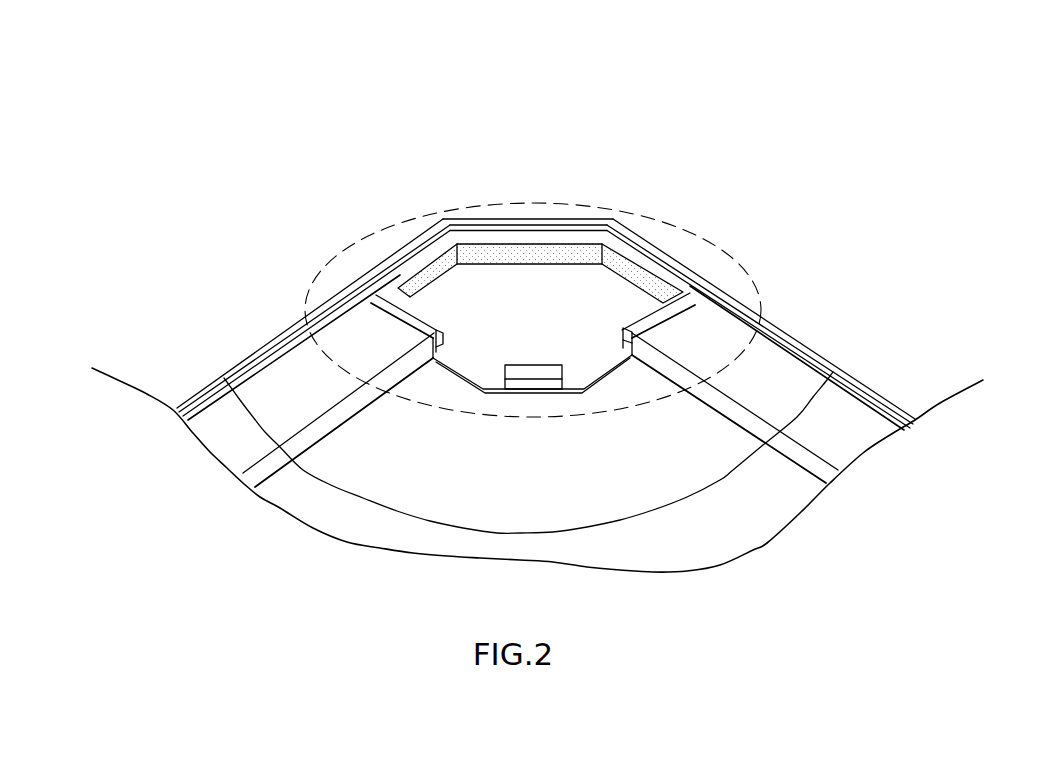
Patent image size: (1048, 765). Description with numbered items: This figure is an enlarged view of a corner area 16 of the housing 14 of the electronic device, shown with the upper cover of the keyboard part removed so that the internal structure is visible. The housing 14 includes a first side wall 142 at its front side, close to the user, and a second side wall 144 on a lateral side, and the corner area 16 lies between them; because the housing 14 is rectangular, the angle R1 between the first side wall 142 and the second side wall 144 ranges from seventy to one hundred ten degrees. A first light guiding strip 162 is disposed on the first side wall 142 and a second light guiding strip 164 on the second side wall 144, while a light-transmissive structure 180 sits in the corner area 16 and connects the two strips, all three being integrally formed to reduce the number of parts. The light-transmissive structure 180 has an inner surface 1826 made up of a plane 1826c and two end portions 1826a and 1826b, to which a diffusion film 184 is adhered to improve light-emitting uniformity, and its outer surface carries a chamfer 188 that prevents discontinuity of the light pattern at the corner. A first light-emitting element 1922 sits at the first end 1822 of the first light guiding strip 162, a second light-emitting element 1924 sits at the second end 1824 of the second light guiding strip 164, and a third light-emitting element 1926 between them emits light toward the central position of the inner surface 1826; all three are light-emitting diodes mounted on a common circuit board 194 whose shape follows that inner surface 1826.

The housing 14 is at (558, 281).
The first side wall 142 is at (896, 370).
The second side wall 144 is at (216, 316).
The corner area 16 is at (328, 268).
The first light guiding strip 162 is at (652, 369).
The second light guiding strip 164 is at (416, 370).
The light-transmissive structure 180 is at (529, 178).
The diffusion film 184 is at (540, 178).
The chamfer 188 is at (490, 210).
The inner surface 1826 is at (540, 178).
The end portion 1826a is at (635, 202).
The end portion 1826b is at (441, 280).
The plane 1826c is at (559, 271).
The first end 1822 is at (628, 307).
The second end 1824 is at (446, 322).
The first light-emitting element 1922 is at (630, 338).
The second light-emitting element 1924 is at (425, 328).
The circuit board 194 is at (578, 394).
The third light-emitting element 1926 is at (535, 372).
The angle R1 is at (527, 530).